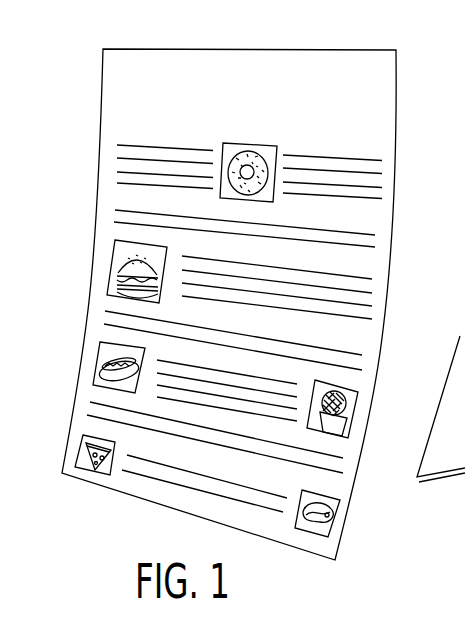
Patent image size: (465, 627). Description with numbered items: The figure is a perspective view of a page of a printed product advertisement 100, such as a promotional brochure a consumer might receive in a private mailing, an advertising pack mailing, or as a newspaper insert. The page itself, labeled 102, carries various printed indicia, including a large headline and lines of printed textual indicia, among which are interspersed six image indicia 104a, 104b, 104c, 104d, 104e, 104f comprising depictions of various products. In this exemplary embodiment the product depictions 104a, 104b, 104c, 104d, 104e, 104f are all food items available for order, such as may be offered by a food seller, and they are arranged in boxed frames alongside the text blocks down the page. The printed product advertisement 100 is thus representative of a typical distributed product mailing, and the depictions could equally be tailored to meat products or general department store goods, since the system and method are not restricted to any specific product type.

The printed product advertisement 100 is at (236, 281).
The sheet / sign substrate 102 is at (382, 205).
The image indicia 104a is at (277, 146).
The image indicia 104b is at (108, 290).
The image indicia 104c is at (95, 375).
The image indicia 104d is at (78, 452).
The image indicia 104e is at (355, 412).
The image indicia 104f is at (335, 510).